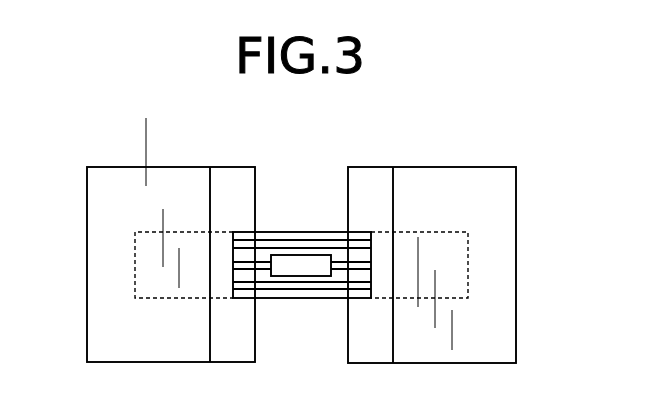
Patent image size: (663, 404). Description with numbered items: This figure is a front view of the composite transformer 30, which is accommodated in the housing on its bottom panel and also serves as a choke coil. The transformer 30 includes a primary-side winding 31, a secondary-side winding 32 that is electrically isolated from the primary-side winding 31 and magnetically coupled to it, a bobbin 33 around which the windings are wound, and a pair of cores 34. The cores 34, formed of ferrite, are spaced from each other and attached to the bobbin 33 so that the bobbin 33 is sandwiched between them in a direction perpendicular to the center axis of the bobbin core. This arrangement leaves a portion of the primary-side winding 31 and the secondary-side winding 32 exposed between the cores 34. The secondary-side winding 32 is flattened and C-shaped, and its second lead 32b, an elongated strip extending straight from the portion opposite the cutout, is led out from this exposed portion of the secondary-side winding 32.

The transformer 30 is at (555, 136).
The primary-side winding 31 is at (264, 243).
The secondary-side winding 32 is at (346, 262).
The second lead 32b is at (313, 262).
The bobbin 33 is at (322, 300).
The cores 34 is at (87, 207).